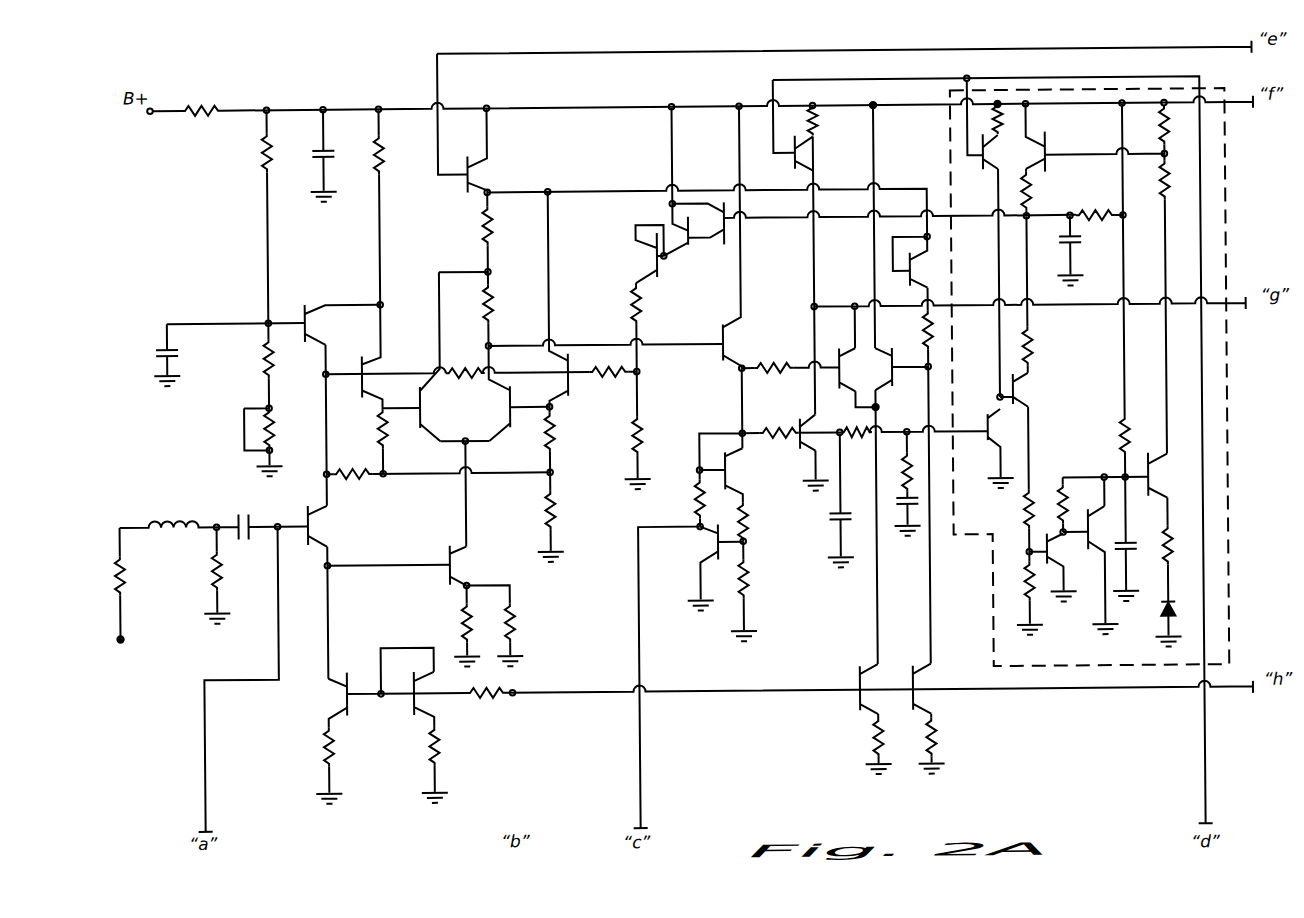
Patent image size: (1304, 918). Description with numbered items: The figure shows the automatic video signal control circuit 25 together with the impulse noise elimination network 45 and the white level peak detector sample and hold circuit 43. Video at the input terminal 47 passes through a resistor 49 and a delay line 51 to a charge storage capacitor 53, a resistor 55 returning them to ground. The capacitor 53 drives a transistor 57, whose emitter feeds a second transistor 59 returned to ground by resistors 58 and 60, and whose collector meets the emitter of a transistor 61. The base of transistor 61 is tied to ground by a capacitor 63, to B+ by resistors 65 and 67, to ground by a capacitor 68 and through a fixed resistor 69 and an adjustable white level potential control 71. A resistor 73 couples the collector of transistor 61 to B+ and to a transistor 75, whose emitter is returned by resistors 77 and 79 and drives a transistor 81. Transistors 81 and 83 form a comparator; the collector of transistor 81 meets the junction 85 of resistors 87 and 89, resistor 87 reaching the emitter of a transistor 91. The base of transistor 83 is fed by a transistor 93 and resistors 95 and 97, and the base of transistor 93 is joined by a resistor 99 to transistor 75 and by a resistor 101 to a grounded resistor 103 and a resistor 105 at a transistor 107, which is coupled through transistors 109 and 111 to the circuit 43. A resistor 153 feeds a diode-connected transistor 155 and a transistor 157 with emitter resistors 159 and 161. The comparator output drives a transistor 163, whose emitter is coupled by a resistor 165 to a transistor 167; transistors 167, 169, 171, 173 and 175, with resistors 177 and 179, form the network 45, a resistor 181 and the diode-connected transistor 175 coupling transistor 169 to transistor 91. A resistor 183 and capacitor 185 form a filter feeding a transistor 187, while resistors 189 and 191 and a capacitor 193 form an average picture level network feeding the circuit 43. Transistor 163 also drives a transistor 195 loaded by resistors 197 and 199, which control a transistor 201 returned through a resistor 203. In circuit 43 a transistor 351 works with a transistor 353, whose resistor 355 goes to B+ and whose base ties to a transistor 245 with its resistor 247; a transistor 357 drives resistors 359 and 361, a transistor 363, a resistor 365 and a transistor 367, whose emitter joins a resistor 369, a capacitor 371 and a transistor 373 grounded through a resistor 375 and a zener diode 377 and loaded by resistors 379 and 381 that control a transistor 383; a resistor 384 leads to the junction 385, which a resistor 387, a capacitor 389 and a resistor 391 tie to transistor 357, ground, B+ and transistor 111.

The automatic video signal control circuit 25 is at (336, 62).
The impulse noise elimination network 45 is at (640, 108).
The white level peak detector sample and hold circuit 43 is at (992, 636).
The input terminal 47 is at (119, 638).
The resistor 49 is at (102, 576).
The delay line 51 is at (169, 495).
The charge storage capacitor 53 is at (225, 495).
The resistor 55 is at (200, 588).
The transistor 57 is at (327, 526).
The resistor 58 is at (454, 634).
The second transistor 59 is at (467, 565).
The resistor 60 is at (521, 634).
The transistor 61 is at (343, 324).
The capacitor 63 is at (154, 355).
The resistor 65 is at (249, 152).
The resistor 67 is at (201, 102).
The capacitor 68 is at (308, 176).
The fixed resistor 69 is at (255, 358).
The adjustable white level potential control 71 is at (281, 442).
The resistor 73 is at (392, 154).
The transistor 75 is at (380, 382).
The resistor 77 is at (367, 441).
The resistor 79 is at (356, 485).
The transistor 81 is at (433, 356).
The transistor 83 is at (497, 393).
The junction 85 is at (505, 261).
The resistor 87 is at (471, 218).
The resistor 89 is at (502, 309).
The transistor 91 is at (483, 150).
The transistor 93 is at (574, 302).
The resistor 95 is at (563, 452).
The resistor 97 is at (559, 526).
The resistor 99 is at (465, 360).
The resistor 101 is at (608, 379).
The resistor 103 is at (652, 452).
The resistor 105 is at (615, 303).
The transistor 107 is at (643, 254).
The transistor 109 is at (693, 239).
The transistor 111 is at (705, 223).
The resistor 153 is at (486, 704).
The diode-connected transistor 155 is at (438, 699).
The transistor 157 is at (331, 700).
The resistor 159 is at (414, 765).
The resistor 161 is at (307, 766).
The transistor 163 is at (741, 346).
The resistor 165 is at (774, 355).
The transistor 167 is at (856, 369).
The transistor 169 is at (893, 351).
The transistor 171 is at (861, 670).
The transistor 173 is at (928, 680).
The diode-connected transistor 175 is at (928, 261).
The resistor 177 is at (861, 746).
The resistor 179 is at (946, 745).
The resistor 181 is at (955, 330).
The resistor 183 is at (783, 415).
The capacitor 185 is at (820, 540).
The transistor 187 is at (803, 452).
The resistor 189 is at (850, 419).
The resistor 191 is at (895, 472).
The capacitor 193 is at (903, 533).
The transistor 195 is at (743, 475).
The resistor 197 is at (759, 521).
The resistor 199 is at (759, 600).
The transistor 201 is at (715, 567).
The resistor 203 is at (683, 499).
The transistor 245 is at (812, 152).
The resistor 247 is at (832, 120).
The transistor 351 is at (1006, 448).
The transistor 353 is at (1002, 151).
The resistor 355 is at (984, 119).
The transistor 357 is at (1033, 390).
The resistor 359 is at (1007, 509).
The resistor 361 is at (1019, 598).
The transistor 363 is at (1066, 566).
The resistor 365 is at (1064, 484).
The transistor 367 is at (1107, 570).
The resistor 369 is at (1105, 433).
The capacitor 371 is at (1139, 553).
The transistor 373 is at (1170, 474).
The resistor 375 is at (1180, 537).
The zener diode 377 is at (1178, 601).
The resistor 379 is at (1147, 180).
The resistor 381 is at (1147, 125).
The transistor 383 is at (1055, 137).
The resistor 384 is at (1043, 190).
The junction 385 is at (1050, 224).
The resistor 387 is at (1048, 345).
The capacitor 389 is at (1086, 260).
The resistor 391 is at (1092, 199).